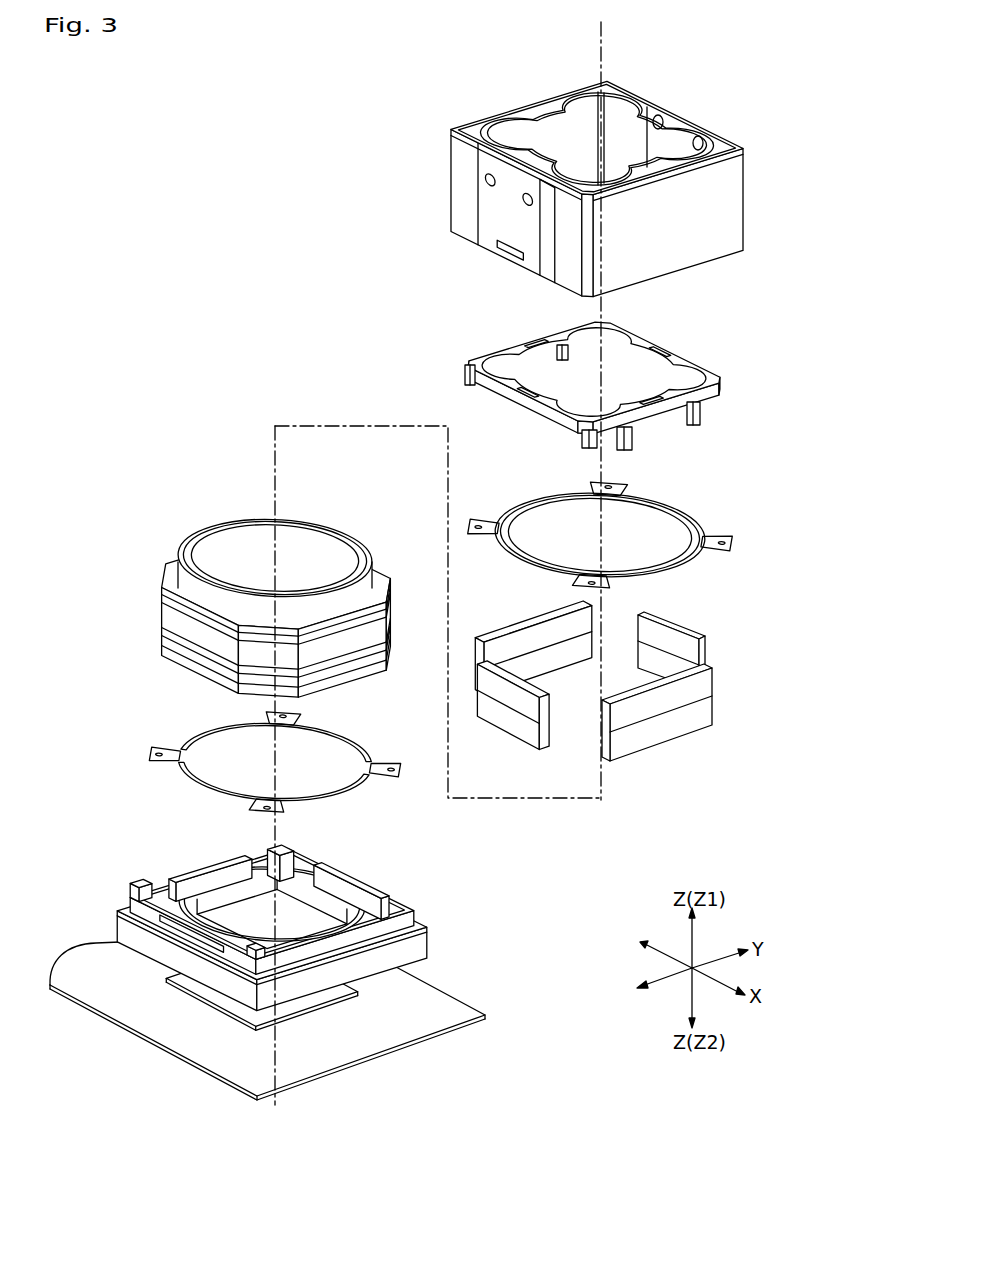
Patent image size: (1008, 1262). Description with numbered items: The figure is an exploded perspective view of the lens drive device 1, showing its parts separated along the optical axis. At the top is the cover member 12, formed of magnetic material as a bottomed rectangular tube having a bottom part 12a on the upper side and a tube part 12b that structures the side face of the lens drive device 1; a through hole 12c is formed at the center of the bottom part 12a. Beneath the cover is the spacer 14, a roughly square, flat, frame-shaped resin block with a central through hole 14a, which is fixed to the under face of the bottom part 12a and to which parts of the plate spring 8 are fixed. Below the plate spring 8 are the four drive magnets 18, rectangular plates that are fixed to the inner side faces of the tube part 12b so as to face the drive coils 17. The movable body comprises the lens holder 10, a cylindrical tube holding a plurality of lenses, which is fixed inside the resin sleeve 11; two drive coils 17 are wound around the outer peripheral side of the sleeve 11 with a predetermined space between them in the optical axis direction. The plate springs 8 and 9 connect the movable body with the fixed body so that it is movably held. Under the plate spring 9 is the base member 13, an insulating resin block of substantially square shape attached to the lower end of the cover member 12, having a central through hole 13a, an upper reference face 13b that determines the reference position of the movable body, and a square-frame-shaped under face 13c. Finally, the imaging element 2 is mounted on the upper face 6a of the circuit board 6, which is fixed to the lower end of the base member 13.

The lens drive device 1 is at (282, 148).
The imaging element 2 is at (325, 1007).
The circuit board 6 is at (405, 1047).
The upper face 6a is at (190, 1027).
The plate spring 8 is at (690, 516).
The plate spring 9 is at (350, 735).
The lens holder 10 is at (322, 538).
The sleeve 11 is at (350, 542).
The cover member 12 is at (742, 190).
The bottom part 12a is at (518, 108).
The tube part 12b is at (688, 236).
The through hole 12c is at (560, 102).
The base member 13 is at (413, 912).
The through hole 13a is at (240, 895).
The reference face 13b is at (230, 878).
The under face 13c is at (408, 967).
The spacer 14 is at (693, 356).
The through hole 14a is at (662, 343).
The drive coil 17 is at (338, 620).
The drive magnet 18 is at (512, 625).